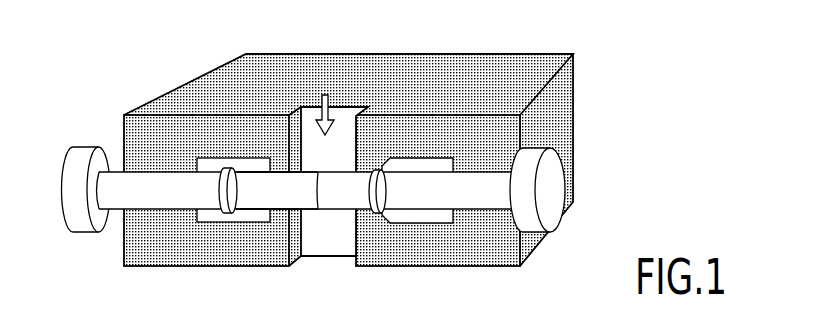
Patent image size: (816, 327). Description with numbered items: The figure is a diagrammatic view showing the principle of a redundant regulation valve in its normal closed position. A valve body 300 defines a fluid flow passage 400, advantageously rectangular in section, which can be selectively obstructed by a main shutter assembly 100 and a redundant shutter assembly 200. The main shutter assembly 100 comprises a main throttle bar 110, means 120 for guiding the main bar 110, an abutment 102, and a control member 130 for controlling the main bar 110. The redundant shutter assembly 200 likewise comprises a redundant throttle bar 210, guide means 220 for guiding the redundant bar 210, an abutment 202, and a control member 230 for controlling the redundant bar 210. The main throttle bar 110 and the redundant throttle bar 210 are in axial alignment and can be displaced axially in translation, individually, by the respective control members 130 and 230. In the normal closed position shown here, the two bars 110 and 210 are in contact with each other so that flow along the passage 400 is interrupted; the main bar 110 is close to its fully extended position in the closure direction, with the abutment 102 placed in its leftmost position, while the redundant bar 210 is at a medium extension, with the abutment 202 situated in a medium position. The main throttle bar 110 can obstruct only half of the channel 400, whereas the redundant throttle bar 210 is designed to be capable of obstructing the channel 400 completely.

The main shutter assembly 100 is at (342, 213).
The abutment 102 is at (385, 162).
The main throttle bar 110 is at (330, 202).
The means for guiding the main bar 120 is at (478, 213).
The control member 130 is at (553, 160).
The redundant shutter assembly 200 is at (143, 213).
The abutment 202 is at (227, 167).
The redundant throttle bar 210 is at (257, 175).
The guide means 220 is at (274, 213).
The control member 230 is at (82, 152).
The valve body 300 is at (510, 68).
The fluid flow passage 400 is at (345, 108).